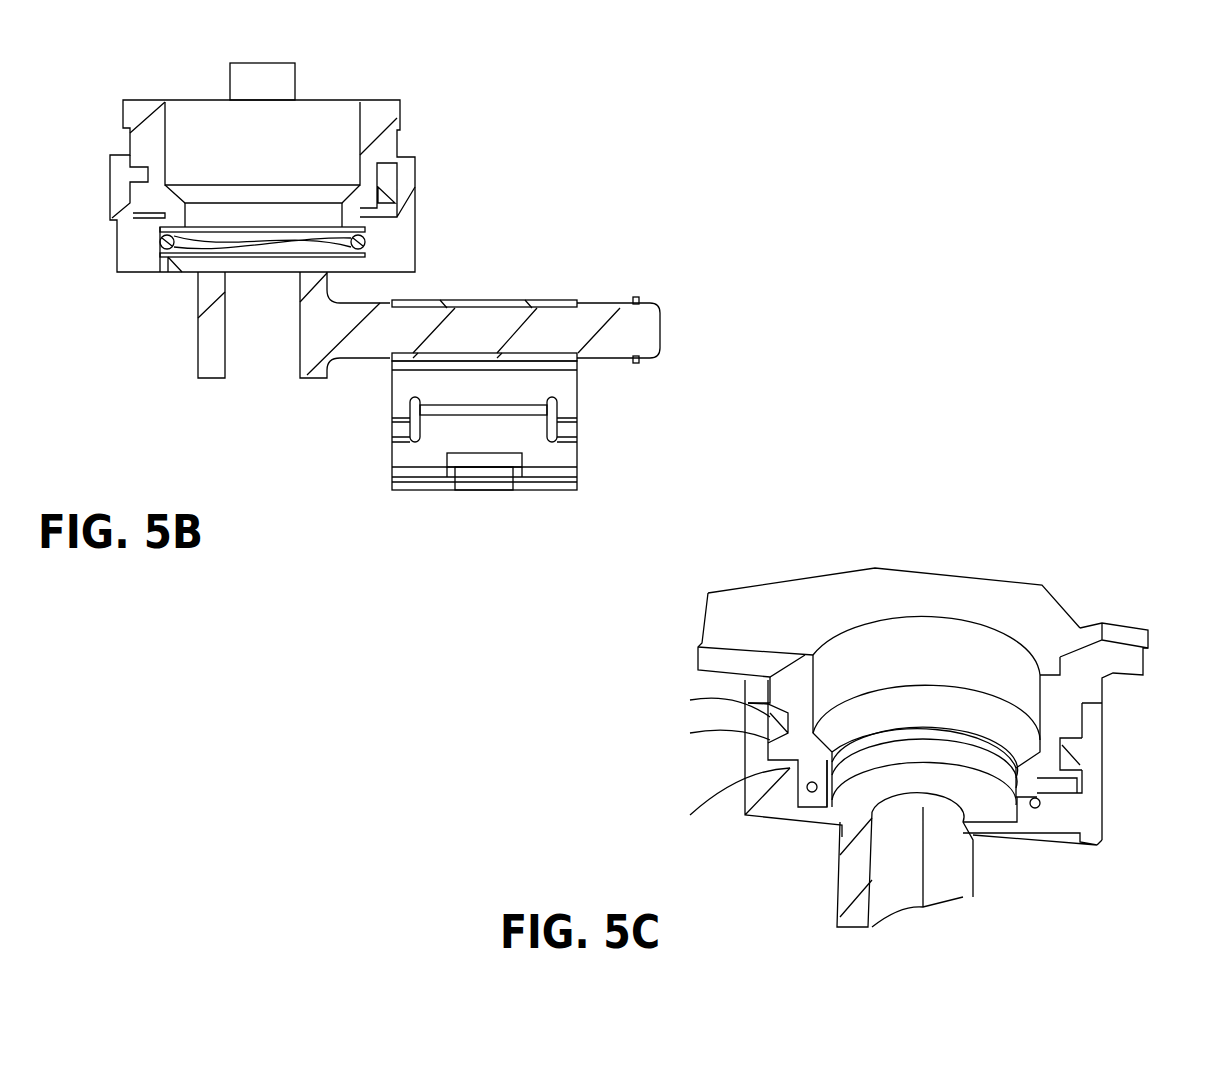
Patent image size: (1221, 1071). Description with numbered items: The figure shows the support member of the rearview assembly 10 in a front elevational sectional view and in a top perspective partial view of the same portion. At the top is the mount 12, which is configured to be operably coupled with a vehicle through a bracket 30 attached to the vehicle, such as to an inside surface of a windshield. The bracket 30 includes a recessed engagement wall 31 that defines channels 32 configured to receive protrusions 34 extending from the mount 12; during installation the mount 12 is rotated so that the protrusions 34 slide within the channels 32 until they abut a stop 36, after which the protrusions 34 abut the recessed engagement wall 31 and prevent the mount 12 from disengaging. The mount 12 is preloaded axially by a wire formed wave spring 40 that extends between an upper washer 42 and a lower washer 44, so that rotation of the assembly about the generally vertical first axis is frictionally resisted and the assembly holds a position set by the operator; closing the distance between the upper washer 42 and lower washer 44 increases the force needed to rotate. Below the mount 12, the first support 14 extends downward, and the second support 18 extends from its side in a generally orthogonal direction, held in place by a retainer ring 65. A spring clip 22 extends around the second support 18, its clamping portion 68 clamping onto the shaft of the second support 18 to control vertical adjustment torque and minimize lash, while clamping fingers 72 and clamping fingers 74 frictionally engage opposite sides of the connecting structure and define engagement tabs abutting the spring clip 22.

In FIG. 5B, the rearview assembly 10 is at (573, 147).
In FIG. 5C, the rearview assembly 10 is at (1028, 490).
In FIG. 5B, the mount 12 is at (417, 162).
In FIG. 5C, the mount 12 is at (1103, 767).
In FIG. 5B, the first support 14 is at (203, 340).
In FIG. 5C, the first support 14 is at (838, 878).
In FIG. 5B, the second support 18 is at (660, 322).
In FIG. 5B, the spring clip 22 is at (433, 440).
In FIG. 5B, the bracket 30 is at (382, 103).
In FIG. 5C, the bracket 30 is at (850, 590).
In FIG. 5C, the recessed engagement wall 31 is at (770, 742).
In FIG. 5B, the channels 32 is at (143, 205).
In FIG. 5B, the protrusions 34 is at (143, 183).
In FIG. 5C, the protrusions 34 is at (770, 708).
In FIG. 5B, the stop 36 is at (138, 252).
In FIG. 5C, the stop 36 is at (790, 778).
In FIG. 5B, the wire formed wave spring 40 is at (360, 245).
In FIG. 5C, the wire formed wave spring 40 is at (1042, 808).
In FIG. 5B, the upper washer 42 is at (360, 230).
In FIG. 5C, the upper washer 42 is at (1042, 793).
In FIG. 5B, the lower washer 44 is at (360, 262).
In FIG. 5C, the lower washer 44 is at (1040, 827).
In FIG. 5B, the retainer ring 65 is at (637, 297).
In FIG. 5B, the clamping portion 68 is at (545, 300).
In FIG. 5B, the clamping fingers 72 is at (400, 430).
In FIG. 5B, the clamping fingers 74 is at (570, 430).